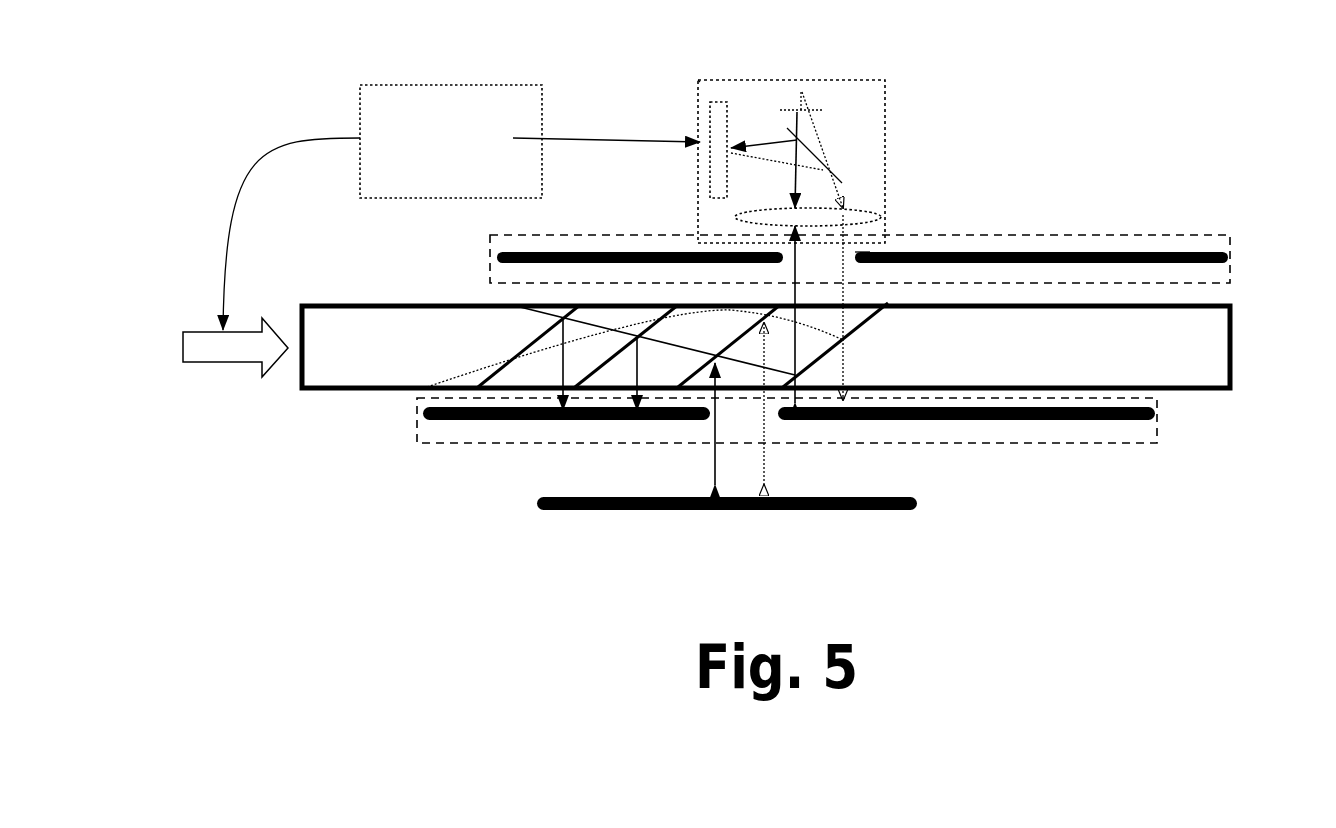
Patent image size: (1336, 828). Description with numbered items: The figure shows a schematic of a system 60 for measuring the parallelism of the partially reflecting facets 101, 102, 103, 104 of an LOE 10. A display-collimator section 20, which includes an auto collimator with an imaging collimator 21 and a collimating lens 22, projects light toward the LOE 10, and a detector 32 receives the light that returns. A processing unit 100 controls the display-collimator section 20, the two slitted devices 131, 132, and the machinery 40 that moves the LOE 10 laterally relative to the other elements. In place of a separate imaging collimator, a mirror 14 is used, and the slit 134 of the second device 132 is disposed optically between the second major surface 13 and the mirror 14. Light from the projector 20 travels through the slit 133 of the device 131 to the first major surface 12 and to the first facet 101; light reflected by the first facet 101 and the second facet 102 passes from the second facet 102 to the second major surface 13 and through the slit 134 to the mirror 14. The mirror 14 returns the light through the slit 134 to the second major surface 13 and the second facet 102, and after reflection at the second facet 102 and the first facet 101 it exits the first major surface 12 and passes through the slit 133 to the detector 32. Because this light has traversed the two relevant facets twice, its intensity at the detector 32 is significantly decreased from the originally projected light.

The LOE 10 is at (794, 347).
The first major surface 12 is at (347, 303).
The second major surface 13 is at (340, 389).
The mirror 14 is at (923, 503).
The display-collimator section 20 is at (893, 137).
The imaging collimator 21 is at (836, 110).
The collimating lens 22 is at (893, 217).
The detector 32 is at (708, 126).
The machinery 40 is at (236, 361).
The system 60 is at (635, 118).
The processing unit 100 is at (430, 187).
The first facet 101 is at (850, 345).
The second facet 102 is at (729, 346).
The partially reflecting facet 103 is at (626, 345).
The partially reflecting facet 104 is at (529, 346).
The device 131 is at (893, 259).
The second device 132 is at (819, 420).
The slit 133 is at (815, 262).
The slit 134 is at (737, 420).